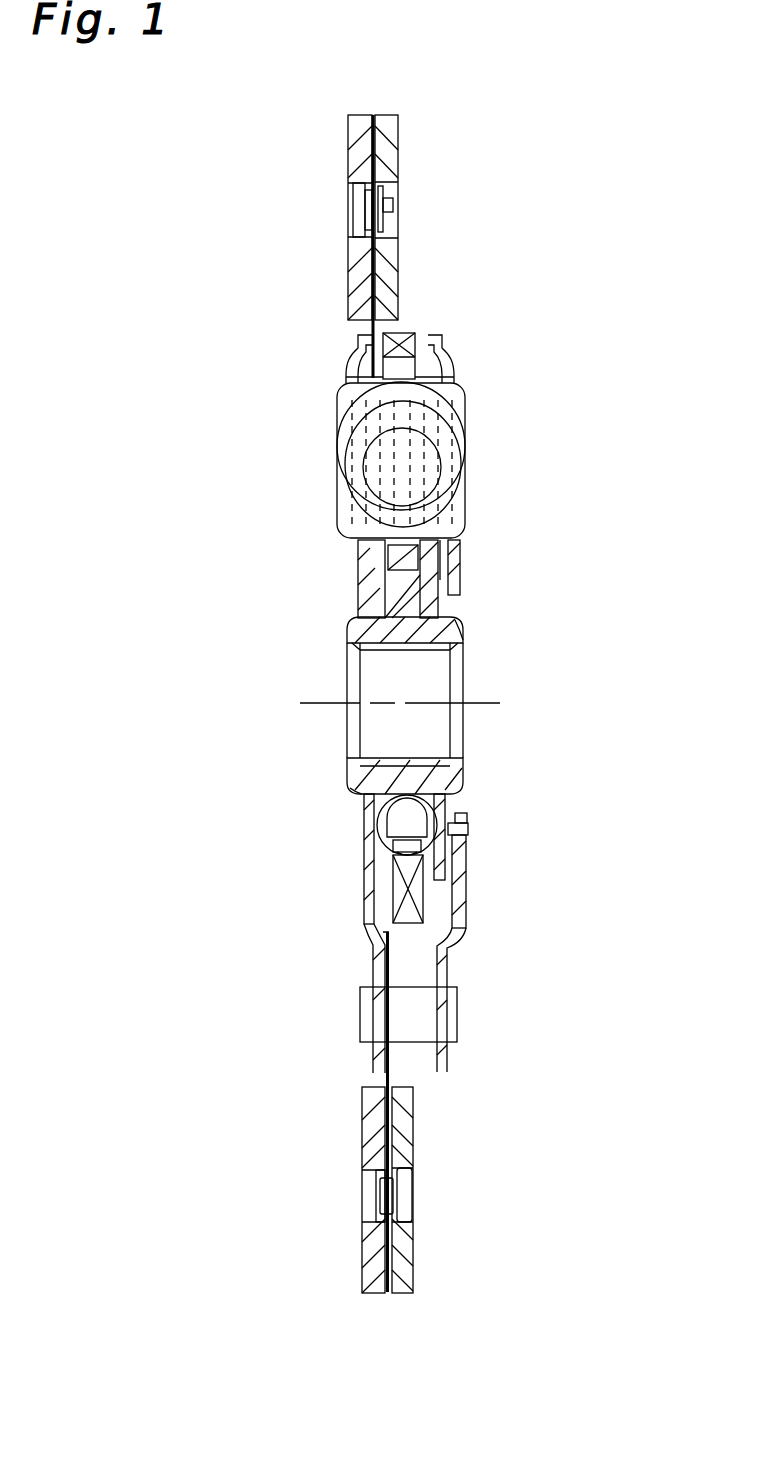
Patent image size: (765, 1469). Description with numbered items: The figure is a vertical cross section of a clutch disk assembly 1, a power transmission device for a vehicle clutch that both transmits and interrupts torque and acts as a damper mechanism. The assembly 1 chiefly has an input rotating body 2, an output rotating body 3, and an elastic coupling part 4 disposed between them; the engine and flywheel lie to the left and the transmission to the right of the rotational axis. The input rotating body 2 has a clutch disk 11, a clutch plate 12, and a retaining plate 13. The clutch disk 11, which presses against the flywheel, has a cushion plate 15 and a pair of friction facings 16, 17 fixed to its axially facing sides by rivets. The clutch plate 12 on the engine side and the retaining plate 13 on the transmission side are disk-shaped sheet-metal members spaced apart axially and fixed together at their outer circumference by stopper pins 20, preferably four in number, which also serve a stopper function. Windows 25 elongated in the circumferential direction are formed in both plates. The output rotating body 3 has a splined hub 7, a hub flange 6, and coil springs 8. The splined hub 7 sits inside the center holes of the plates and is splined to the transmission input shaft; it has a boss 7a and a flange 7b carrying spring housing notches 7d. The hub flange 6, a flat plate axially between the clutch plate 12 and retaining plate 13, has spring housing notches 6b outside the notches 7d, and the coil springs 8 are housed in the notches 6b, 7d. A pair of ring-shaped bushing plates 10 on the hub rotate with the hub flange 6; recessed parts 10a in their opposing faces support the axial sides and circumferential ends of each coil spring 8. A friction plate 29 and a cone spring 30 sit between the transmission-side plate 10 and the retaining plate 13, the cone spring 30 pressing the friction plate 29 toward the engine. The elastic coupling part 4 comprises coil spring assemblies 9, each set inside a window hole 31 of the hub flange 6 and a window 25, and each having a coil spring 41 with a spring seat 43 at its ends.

The clutch disk assembly 1 is at (418, 402).
The input rotating body 2 is at (268, 200).
The output rotating body 3 is at (427, 784).
The elastic coupling part 4 is at (326, 438).
The hub flange 6 is at (387, 937).
The spring housing notches 6b is at (394, 885).
The splined hub 7 is at (470, 631).
The boss 7a is at (462, 636).
The flange 7b is at (444, 558).
The spring housing notches 7d is at (380, 780).
The coil springs 8 is at (412, 808).
The coil spring assemblies 9 is at (470, 462).
The plates 10 is at (360, 600).
The recessed parts 10a is at (377, 827).
The clutch disk 11 is at (364, 215).
The clutch plate 12 is at (393, 850).
The retaining plate 13 is at (463, 906).
The cushion plate 15 is at (380, 160).
The friction facing 16 is at (360, 280).
The friction facing 17 is at (395, 285).
The stopper pins 20 is at (425, 1003).
The windows 25 is at (336, 376).
The friction plate 29 is at (466, 846).
The cone spring 30 is at (466, 858).
The window holes 31 is at (400, 335).
The coil spring 41 is at (357, 483).
The spring seat 43 is at (472, 400).